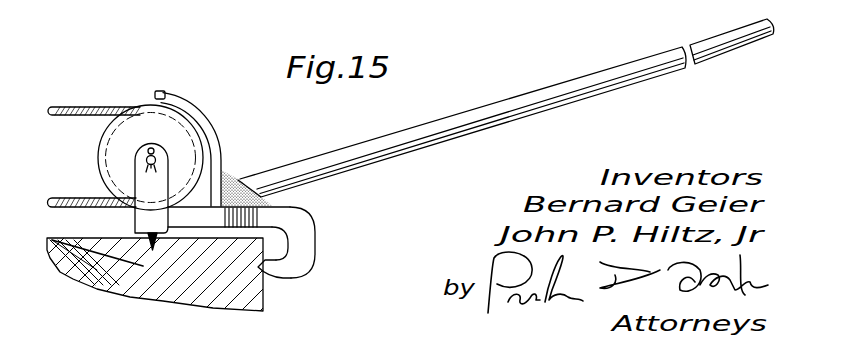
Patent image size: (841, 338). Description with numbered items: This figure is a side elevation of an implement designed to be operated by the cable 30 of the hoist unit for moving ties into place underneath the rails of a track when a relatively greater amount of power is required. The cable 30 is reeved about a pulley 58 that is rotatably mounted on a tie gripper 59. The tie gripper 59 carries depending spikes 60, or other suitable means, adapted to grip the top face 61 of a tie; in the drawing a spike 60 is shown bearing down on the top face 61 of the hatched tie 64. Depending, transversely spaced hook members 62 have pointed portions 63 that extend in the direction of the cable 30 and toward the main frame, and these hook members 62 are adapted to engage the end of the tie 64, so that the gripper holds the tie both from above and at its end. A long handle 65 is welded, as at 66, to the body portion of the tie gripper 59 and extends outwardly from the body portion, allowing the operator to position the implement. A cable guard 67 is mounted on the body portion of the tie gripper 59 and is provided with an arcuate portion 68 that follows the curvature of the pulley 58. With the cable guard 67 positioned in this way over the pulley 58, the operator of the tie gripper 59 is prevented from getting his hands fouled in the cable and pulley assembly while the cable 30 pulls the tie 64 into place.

The cable 30 is at (60, 107).
The pulley 58 is at (134, 133).
The tie gripper 59 is at (135, 223).
The depending spikes 60 is at (152, 250).
The top face of tie 61 is at (67, 237).
The hook members 62 is at (303, 240).
The pointed portions 63 is at (270, 278).
The tie 64 is at (268, 303).
The handle 65 is at (556, 86).
The weld 66 is at (224, 178).
The cable guard 67 is at (200, 108).
The arcuate portion 68 is at (162, 91).